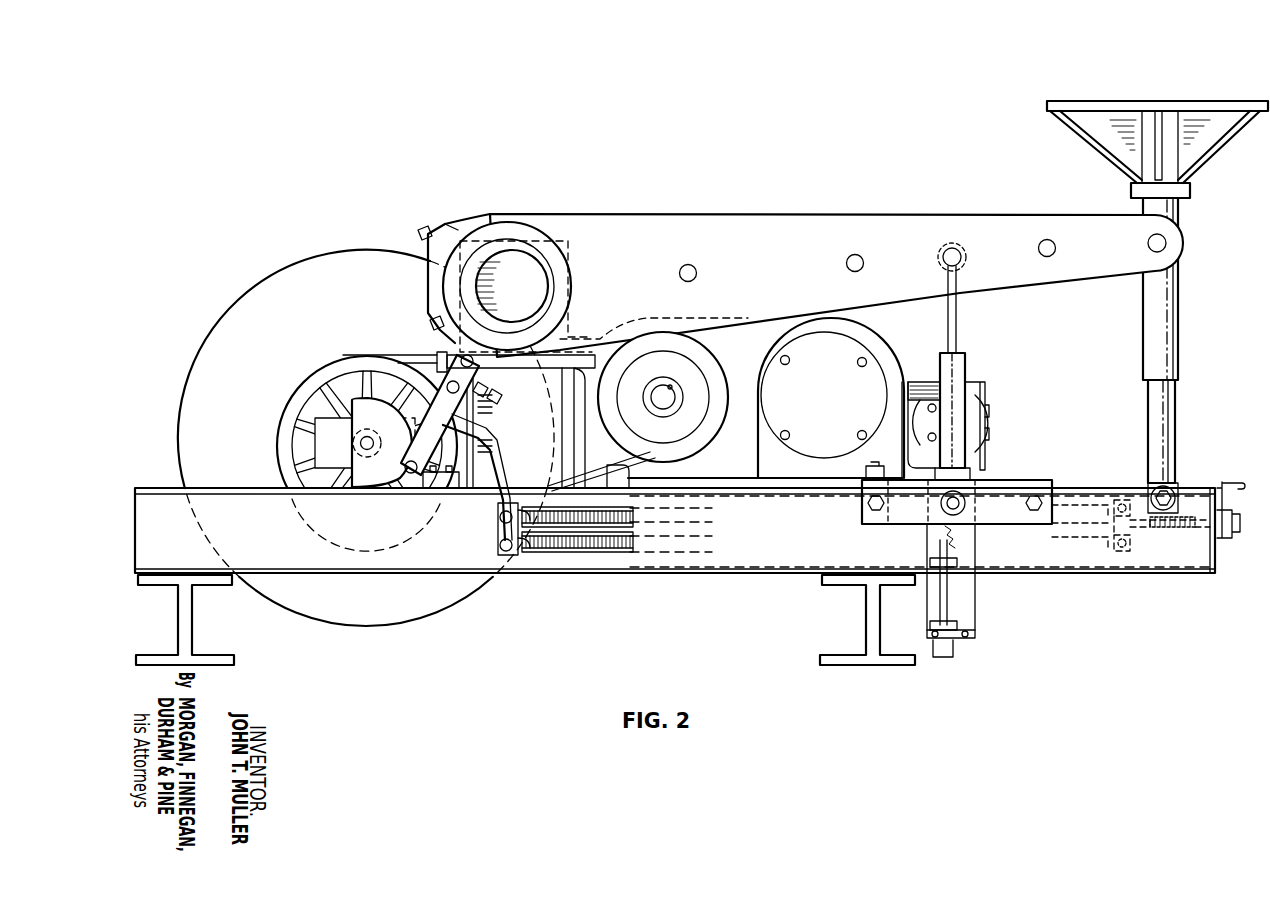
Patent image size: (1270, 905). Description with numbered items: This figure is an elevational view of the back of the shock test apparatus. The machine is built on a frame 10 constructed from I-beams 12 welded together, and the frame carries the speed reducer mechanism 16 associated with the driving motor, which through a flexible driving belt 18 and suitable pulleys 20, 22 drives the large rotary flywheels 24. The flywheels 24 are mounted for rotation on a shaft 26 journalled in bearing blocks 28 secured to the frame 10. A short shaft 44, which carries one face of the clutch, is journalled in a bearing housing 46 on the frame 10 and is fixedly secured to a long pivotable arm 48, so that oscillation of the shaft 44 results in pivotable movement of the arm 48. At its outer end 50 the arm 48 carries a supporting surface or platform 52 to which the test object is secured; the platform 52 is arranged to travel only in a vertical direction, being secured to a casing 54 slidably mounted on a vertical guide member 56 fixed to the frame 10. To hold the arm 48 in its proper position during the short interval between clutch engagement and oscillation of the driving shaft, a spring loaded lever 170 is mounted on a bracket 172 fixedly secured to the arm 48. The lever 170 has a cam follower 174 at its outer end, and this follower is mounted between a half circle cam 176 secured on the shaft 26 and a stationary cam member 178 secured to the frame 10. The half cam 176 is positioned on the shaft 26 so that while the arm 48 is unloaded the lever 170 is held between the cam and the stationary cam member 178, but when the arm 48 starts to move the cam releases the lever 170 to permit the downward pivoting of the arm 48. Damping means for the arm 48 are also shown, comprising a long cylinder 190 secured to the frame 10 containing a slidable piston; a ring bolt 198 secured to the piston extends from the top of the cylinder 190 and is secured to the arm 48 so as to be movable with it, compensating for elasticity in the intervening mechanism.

The frame 10 is at (580, 576).
The I-beams 12 is at (182, 598).
The speed reducer mechanism 16 is at (870, 345).
The flexible driving belt 18 is at (424, 354).
The pulley 20 is at (694, 374).
The pulley 22 is at (346, 360).
The rotary flywheels 24 is at (288, 282).
The shaft 26 is at (360, 446).
The bearing blocks 28 is at (322, 430).
The short shaft 44 is at (520, 268).
The bearing housing 46 is at (562, 236).
The pivotable arm 48 is at (932, 222).
The outer end 50 is at (1172, 244).
The platform 52 is at (1072, 106).
The casing 54 is at (1163, 334).
The vertical guide member 56 is at (1160, 434).
The spring loaded lever 170 is at (470, 426).
The bracket 172 is at (452, 230).
The cam follower 174 is at (398, 490).
The half circle cam 176 is at (365, 470).
The stationary cam member 178 is at (418, 485).
The cylinder 190 is at (962, 374).
The ring bolt 198 is at (953, 340).